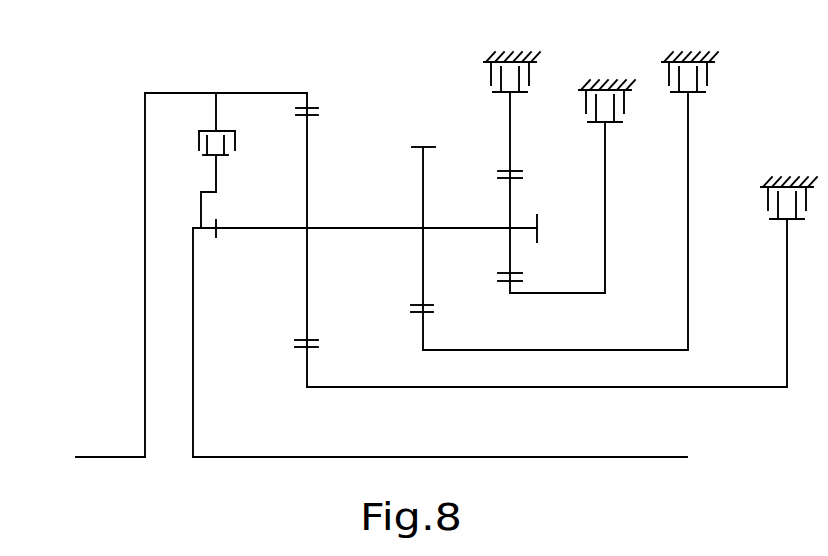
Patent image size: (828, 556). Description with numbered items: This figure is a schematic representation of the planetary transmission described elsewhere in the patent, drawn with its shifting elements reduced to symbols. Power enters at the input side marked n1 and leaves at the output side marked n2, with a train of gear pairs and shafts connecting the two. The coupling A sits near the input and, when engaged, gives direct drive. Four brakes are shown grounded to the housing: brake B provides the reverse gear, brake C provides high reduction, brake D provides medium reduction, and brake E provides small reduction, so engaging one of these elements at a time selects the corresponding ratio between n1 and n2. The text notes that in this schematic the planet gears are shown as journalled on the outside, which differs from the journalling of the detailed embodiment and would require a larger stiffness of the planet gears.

The coupling A is at (226, 160).
The brake B is at (512, 57).
The brake C is at (572, 174).
The brake D is at (570, 186).
The brake E is at (562, 265).
The input speed / input shaft n1 is at (39, 441).
The output speed / output shaft n2 is at (700, 440).